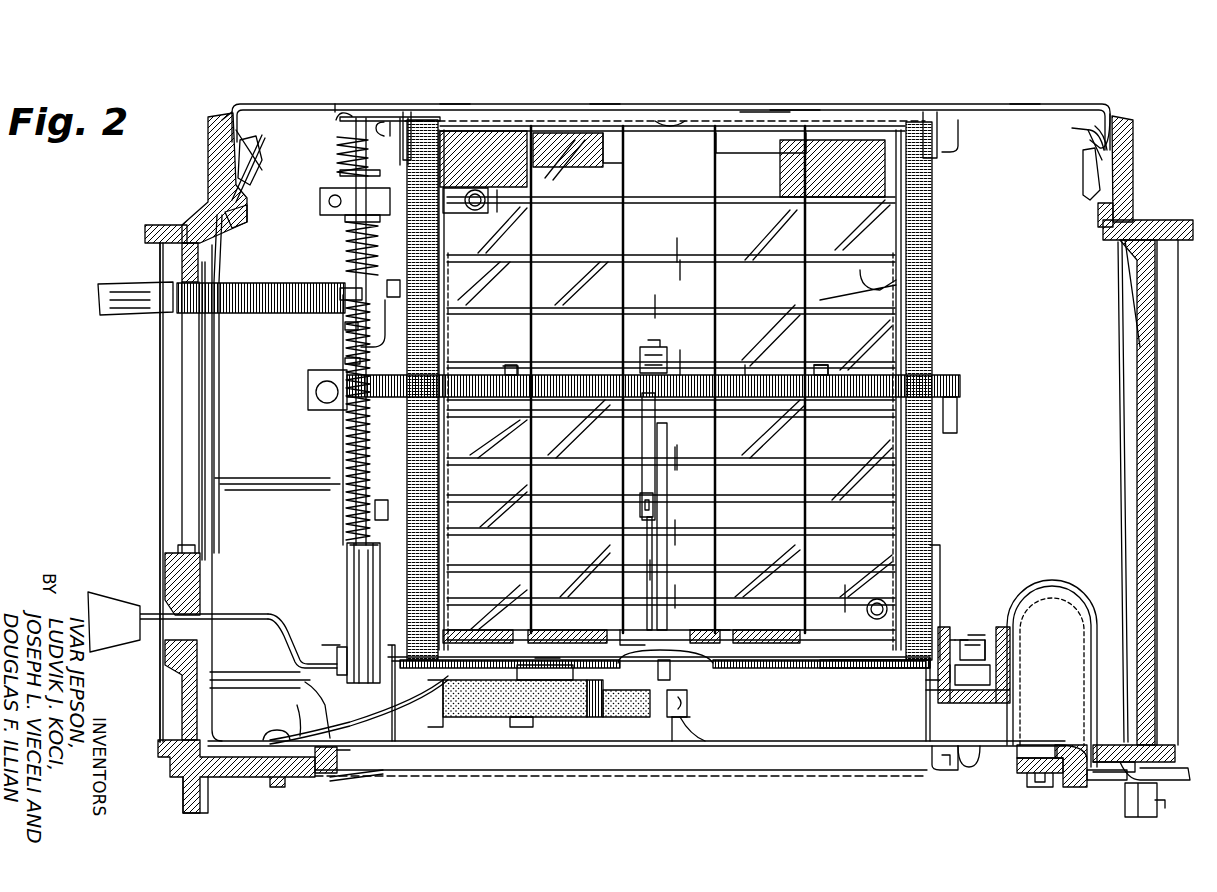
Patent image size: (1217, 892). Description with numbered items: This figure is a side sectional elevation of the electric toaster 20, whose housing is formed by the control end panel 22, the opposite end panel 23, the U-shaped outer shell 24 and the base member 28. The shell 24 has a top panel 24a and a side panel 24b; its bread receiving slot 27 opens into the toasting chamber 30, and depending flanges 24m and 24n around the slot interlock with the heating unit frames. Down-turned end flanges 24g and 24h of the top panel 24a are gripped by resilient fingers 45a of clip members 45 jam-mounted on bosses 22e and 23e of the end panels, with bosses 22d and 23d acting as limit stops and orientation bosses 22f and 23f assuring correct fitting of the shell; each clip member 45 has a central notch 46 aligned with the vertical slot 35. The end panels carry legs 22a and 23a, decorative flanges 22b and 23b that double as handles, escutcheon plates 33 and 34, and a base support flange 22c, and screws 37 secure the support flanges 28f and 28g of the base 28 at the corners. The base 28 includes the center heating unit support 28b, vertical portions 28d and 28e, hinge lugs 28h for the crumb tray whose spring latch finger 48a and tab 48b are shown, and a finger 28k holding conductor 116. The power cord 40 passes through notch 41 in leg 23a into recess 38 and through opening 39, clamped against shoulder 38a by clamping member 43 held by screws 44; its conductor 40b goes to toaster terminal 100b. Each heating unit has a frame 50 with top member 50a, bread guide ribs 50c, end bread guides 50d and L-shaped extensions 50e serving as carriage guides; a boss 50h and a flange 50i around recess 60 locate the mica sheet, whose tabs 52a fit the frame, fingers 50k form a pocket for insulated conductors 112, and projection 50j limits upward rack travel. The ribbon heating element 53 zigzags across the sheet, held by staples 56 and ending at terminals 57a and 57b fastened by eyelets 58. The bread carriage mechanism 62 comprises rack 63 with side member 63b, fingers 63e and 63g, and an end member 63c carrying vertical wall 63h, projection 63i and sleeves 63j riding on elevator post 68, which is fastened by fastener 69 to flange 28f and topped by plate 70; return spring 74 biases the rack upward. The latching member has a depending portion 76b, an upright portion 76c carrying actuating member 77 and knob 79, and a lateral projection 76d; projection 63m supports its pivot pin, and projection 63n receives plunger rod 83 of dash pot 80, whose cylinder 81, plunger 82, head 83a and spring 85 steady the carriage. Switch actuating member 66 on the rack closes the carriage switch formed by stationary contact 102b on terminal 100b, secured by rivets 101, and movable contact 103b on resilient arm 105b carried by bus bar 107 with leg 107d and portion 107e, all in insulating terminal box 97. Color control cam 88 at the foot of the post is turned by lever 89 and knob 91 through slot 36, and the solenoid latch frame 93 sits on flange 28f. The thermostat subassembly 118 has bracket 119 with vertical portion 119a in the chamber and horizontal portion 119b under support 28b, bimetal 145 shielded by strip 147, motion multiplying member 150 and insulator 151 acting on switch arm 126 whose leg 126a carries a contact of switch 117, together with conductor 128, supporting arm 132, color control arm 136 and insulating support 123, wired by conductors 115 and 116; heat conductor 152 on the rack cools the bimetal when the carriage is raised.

The toaster 20 is at (692, 64).
The left end wall 22 is at (204, 176).
The foot 22a is at (183, 802).
The flange 22b is at (145, 238).
The base portion 22c is at (218, 778).
The lug 22d is at (262, 160).
The lug 22e is at (247, 210).
The strip 22f is at (258, 136).
The right end wall 23 is at (1133, 140).
The foot 23a is at (1132, 817).
The flange 23b is at (1192, 222).
The lug 23d is at (1086, 160).
The lug 23e is at (1098, 216).
The clip 23f is at (1075, 128).
The cover 24 is at (983, 99).
The cover portion 24a is at (335, 104).
The cover portion 24b is at (1020, 118).
The cover edge 24g is at (235, 108).
The cover hook 24h is at (1110, 114).
The cover portion 24m is at (604, 108).
The cover flange 24n is at (408, 112).
The cover top 27 is at (455, 104).
The base frame 28 is at (926, 718).
The frame portion 28b is at (850, 672).
The frame wall 28d is at (390, 658).
The frame wall 28e is at (928, 688).
The frame tab 28f is at (298, 712).
The frame tab 28g is at (966, 768).
The frame tab 28h is at (940, 765).
The frame tab 28k is at (264, 735).
The toasting chamber 30 is at (667, 284).
The bracket tab 33 is at (168, 568).
The outer shell wall 34 is at (1178, 335).
The shell wall 35 is at (186, 430).
The bracket 36 is at (186, 616).
The support 37 is at (1030, 778).
The support 38 is at (1130, 775).
The support flange 38a is at (1125, 745).
The support wall 39 is at (1086, 748).
The flange 40 is at (1175, 784).
The housing arch 40b is at (1076, 598).
The lug 41 is at (1152, 802).
The support block 43 is at (1088, 782).
The plate 44 is at (1108, 790).
The inner wall 45 is at (222, 258).
The spring clip 45a is at (243, 130).
The lever 46 is at (222, 322).
The bottom plate 48a is at (430, 725).
The tab 48b is at (338, 780).
The heating unit 50 is at (754, 114).
The heating unit top 50a is at (786, 110).
The heating unit block 50c is at (540, 176).
The support bar 50d is at (446, 342).
The side column 50e is at (406, 430).
The heater portion 50h is at (666, 120).
The heater portion 50i is at (712, 630).
The tab 50j is at (390, 282).
The hook 50k is at (396, 122).
The inner liner 52a is at (496, 120).
The wire 53 is at (875, 280).
The pin 56 is at (498, 190).
The rail 57a is at (870, 668).
The bearing block 57b is at (452, 188).
The bearing 58 is at (464, 204).
The rail dome 60 is at (720, 676).
The carriage 62 is at (766, 398).
The carriage bar 63 is at (790, 374).
The carriage bar 63b is at (746, 366).
The carriage tab 63c is at (822, 366).
The carriage tab 63e is at (520, 354).
The carriage arm 63g is at (682, 352).
The carriage arm 63h is at (350, 222).
The carriage block 63i is at (330, 190).
The carriage arm 63j is at (342, 172).
The carriage tab 63m is at (345, 358).
The carriage tab 63n is at (345, 327).
The carriage tab 66 is at (958, 415).
The spring 68 is at (362, 240).
The base tab 69 is at (352, 752).
The hook 70 is at (348, 116).
The spring 74 is at (340, 146).
The spring 76b is at (345, 426).
The hook 76c is at (360, 340).
The guide 76d is at (378, 492).
The lever arm 77 is at (238, 493).
The operating arm 79 is at (100, 284).
The slide 80 is at (340, 578).
The rod 81 is at (345, 600).
The slide top 82 is at (338, 568).
The bracket 83 is at (344, 456).
The bracket tab 83a is at (340, 293).
The wire 85 is at (345, 486).
The block 88 is at (338, 650).
The wire 89 is at (258, 622).
The handle 91 is at (114, 606).
The connector 93 is at (328, 646).
The switch block 97 is at (1010, 688).
The contact 100b is at (972, 688).
The contact 101 is at (944, 690).
The contact 102b is at (1000, 652).
The contact 103b is at (988, 624).
The contact 105b is at (970, 626).
The contact arm 107 is at (962, 628).
The contact arm 107d is at (952, 628).
The contact arm 107e is at (934, 560).
The bracket 112 is at (382, 331).
The bracket 115 is at (546, 660).
The bracket 116 is at (312, 696).
The bracket 117 is at (688, 692).
The insulator 118 is at (594, 714).
The slide 119 is at (646, 586).
The slide arm 119a is at (646, 544).
The slide arm 119b is at (618, 634).
The insulator 123 is at (530, 702).
The lever 126 is at (666, 725).
The lever arm 126a is at (700, 725).
The tab 128 is at (512, 720).
The pin 132 is at (684, 716).
The plate 136 is at (669, 636).
The rod 145 is at (640, 424).
The rod 147 is at (640, 474).
The pin 150 is at (678, 474).
The bracket 151 is at (680, 672).
The block 152 is at (636, 352).